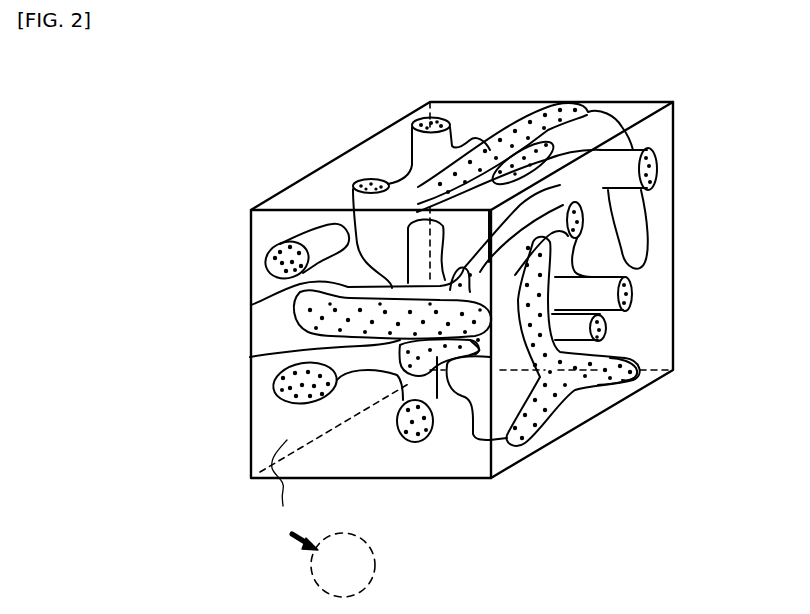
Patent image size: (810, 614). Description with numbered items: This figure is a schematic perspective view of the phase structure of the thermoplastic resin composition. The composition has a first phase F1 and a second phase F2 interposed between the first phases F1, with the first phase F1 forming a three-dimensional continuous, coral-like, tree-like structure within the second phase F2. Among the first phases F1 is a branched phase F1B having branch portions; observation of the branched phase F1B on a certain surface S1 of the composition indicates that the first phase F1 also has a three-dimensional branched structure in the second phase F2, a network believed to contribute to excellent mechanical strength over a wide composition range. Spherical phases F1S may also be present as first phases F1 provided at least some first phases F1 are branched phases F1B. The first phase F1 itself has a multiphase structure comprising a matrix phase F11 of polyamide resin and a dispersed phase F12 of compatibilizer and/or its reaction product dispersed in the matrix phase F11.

The first phase F1 is at (417, 147).
The spherical phase F1S is at (268, 259).
The branched phase F1B is at (302, 326).
The matrix phase F11 is at (627, 362).
The dispersed phase F12 is at (630, 377).
The second phase F2 is at (657, 332).
The surface S1 is at (321, 518).